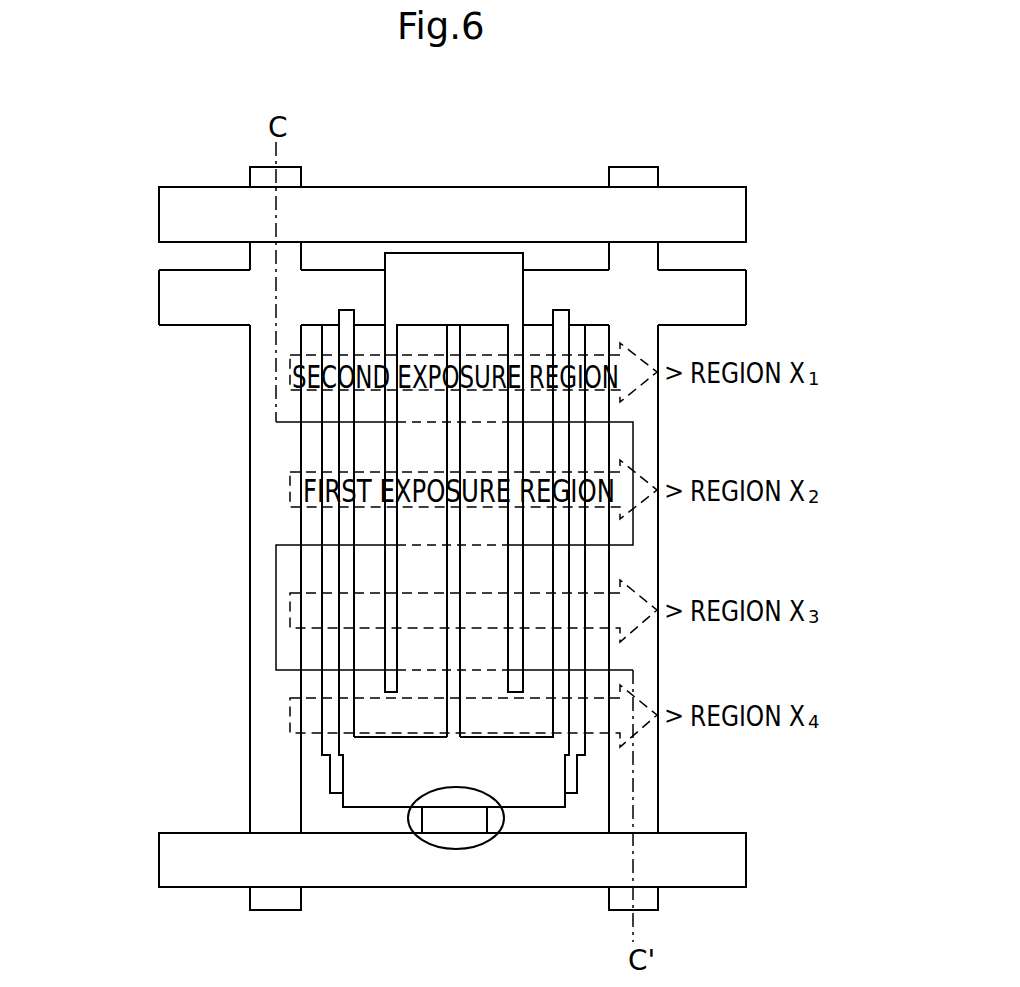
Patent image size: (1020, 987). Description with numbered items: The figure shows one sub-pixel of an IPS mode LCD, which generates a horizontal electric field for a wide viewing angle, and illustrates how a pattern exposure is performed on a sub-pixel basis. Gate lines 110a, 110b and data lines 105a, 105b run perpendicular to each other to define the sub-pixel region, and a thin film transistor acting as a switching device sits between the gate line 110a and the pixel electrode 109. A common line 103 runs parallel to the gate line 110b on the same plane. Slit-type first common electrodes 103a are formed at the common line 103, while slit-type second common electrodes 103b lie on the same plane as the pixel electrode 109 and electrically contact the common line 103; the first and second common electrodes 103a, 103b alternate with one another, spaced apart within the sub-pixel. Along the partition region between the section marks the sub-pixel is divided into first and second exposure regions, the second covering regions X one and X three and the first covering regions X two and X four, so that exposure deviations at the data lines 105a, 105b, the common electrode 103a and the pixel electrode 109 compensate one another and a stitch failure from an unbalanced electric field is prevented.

The common line 103 is at (738, 298).
The first common electrode 103a is at (327, 465).
The second common electrode 103b is at (392, 578).
The data line 105a is at (263, 173).
The data line 105b is at (634, 175).
The pixel electrode 109 is at (548, 778).
The gate line 110a is at (167, 858).
The gate line 110b is at (738, 215).